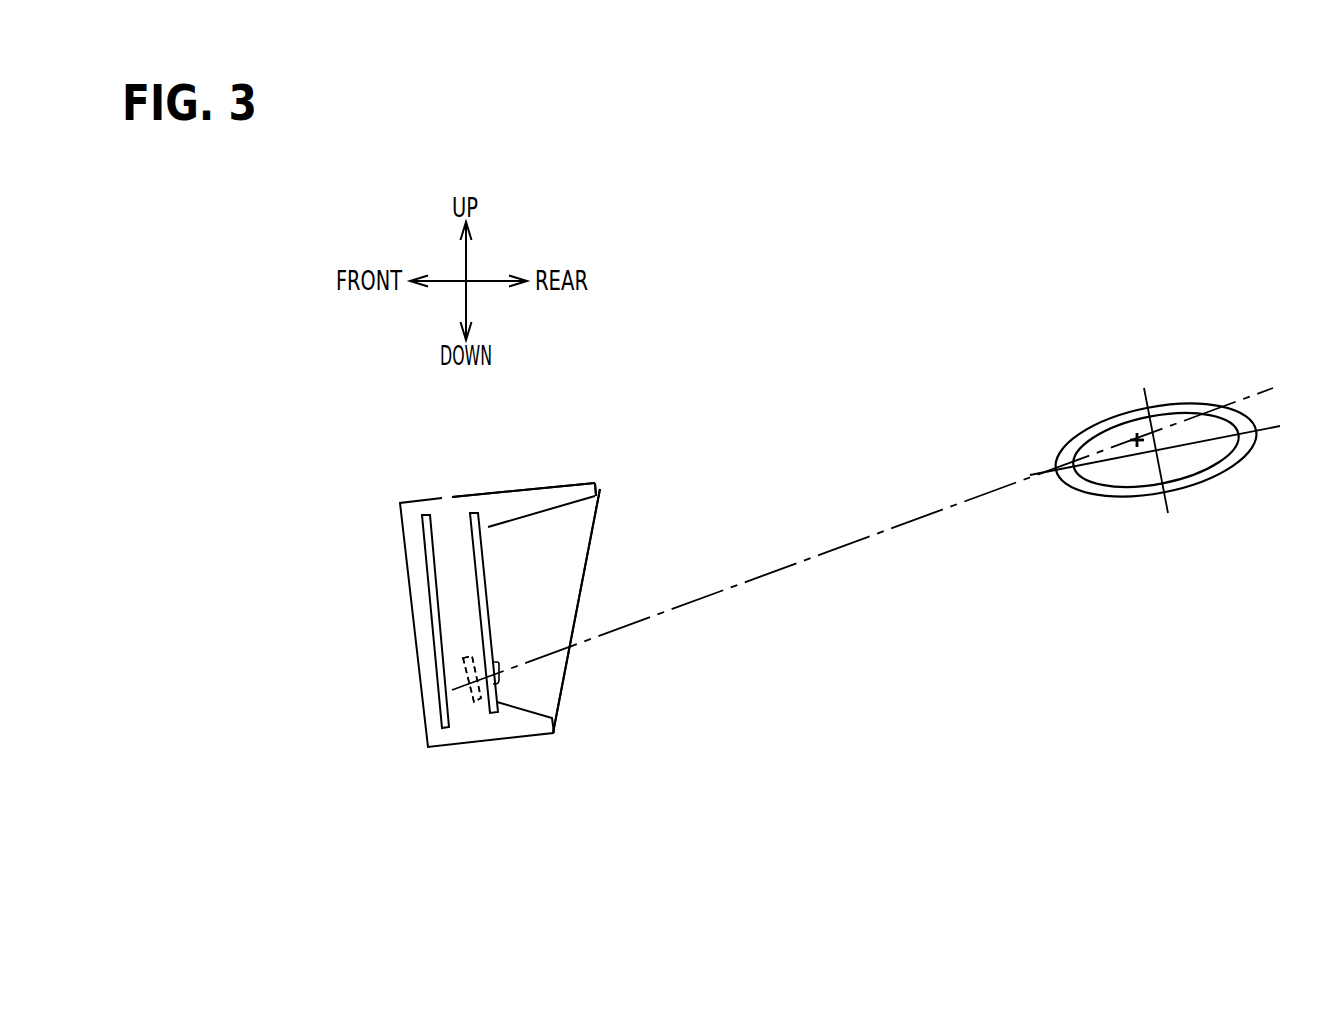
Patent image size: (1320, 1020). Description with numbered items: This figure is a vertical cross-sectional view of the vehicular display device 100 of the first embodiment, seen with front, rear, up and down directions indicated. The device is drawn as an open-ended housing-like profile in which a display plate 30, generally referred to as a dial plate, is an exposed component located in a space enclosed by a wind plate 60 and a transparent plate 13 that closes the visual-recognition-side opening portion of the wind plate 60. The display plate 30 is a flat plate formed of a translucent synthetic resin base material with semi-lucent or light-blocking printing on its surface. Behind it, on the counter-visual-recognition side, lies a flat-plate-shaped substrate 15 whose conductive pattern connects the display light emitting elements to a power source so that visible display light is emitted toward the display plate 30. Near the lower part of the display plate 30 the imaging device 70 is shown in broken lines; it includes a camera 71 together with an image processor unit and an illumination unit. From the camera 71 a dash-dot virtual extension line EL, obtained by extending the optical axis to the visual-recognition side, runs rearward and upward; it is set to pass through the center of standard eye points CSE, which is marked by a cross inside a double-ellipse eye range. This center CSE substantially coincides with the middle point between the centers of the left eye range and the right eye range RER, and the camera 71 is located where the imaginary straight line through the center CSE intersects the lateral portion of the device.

The vehicular display device 100 is at (386, 480).
The transparent plate 13 is at (597, 498).
The substrate 15 is at (430, 617).
The display plate 30 is at (472, 528).
The wind plate 60 is at (533, 488).
The imaging device 70 is at (476, 704).
The camera 71 is at (472, 679).
The extension line EL is at (945, 510).
The center of standard eye points CSE is at (1134, 434).
The right eye range RER is at (1242, 462).